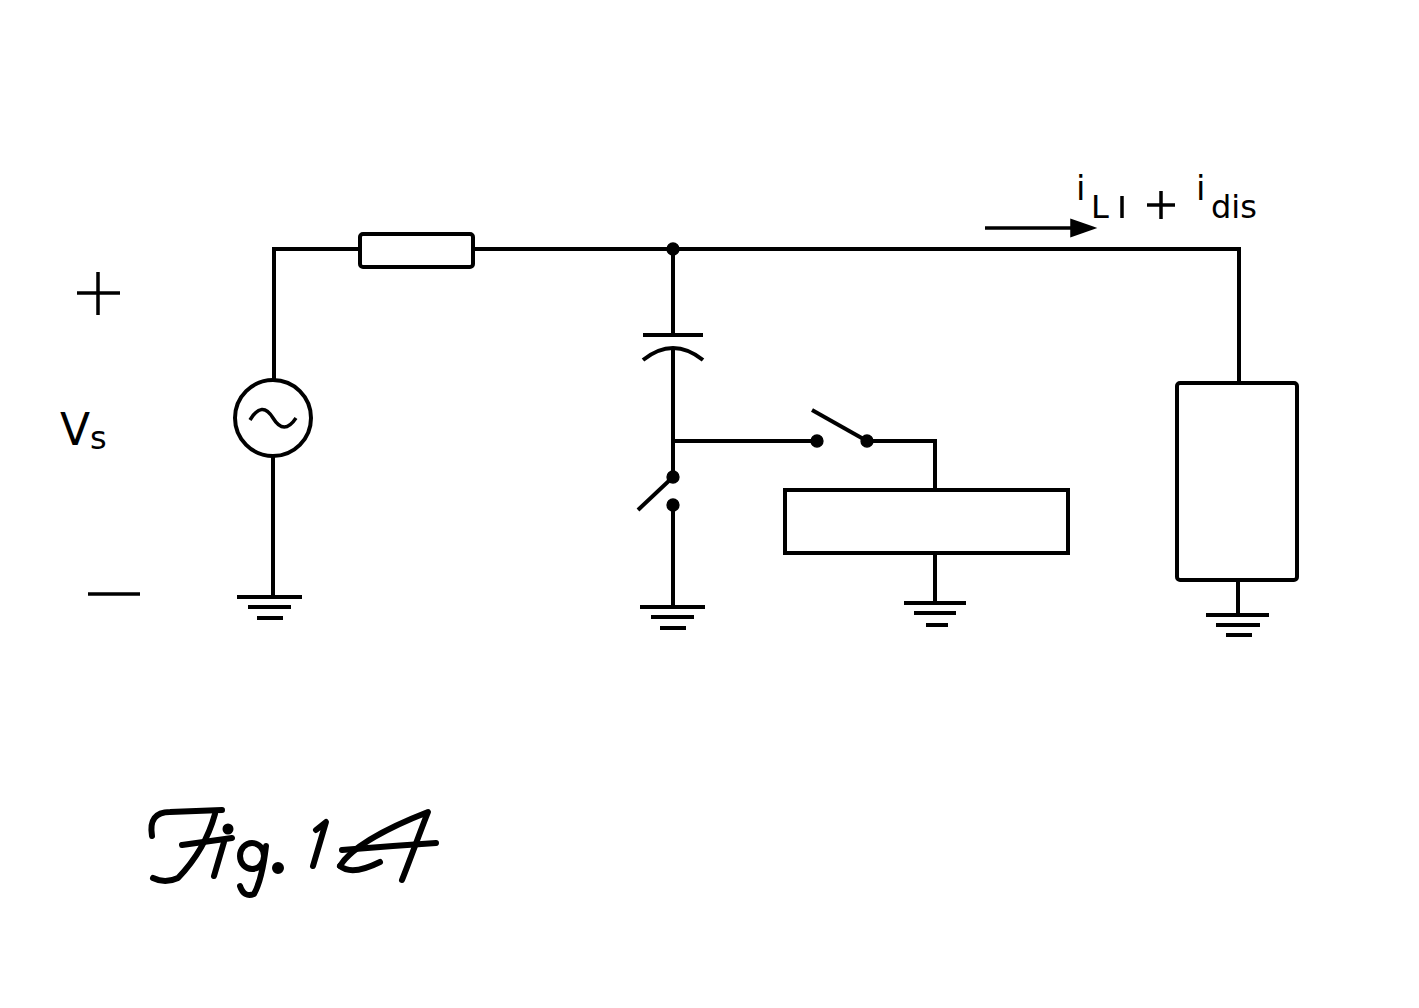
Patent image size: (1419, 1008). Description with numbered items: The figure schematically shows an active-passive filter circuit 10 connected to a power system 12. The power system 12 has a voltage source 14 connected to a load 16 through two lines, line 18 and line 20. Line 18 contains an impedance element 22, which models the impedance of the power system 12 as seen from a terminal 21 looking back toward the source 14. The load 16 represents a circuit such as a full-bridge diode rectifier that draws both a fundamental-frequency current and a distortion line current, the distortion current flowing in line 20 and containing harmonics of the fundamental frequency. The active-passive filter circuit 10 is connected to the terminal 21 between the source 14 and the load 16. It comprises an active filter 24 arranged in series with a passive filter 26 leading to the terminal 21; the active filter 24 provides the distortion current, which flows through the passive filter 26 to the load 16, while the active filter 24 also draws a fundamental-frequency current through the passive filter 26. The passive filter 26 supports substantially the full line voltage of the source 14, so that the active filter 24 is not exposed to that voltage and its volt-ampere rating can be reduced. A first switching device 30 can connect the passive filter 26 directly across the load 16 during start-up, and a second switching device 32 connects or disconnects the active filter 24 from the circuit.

The active-passive filter circuit 10 is at (432, 313).
The power system 12 is at (226, 44).
The voltage source 14 is at (189, 291).
The load 16 is at (1369, 331).
The line 18 is at (580, 114).
The line 20 is at (956, 190).
The terminal 21 is at (776, 138).
The impedance element 22 is at (428, 192).
The active filter 24 is at (952, 588).
The passive filter 26 is at (744, 323).
The first switching device 30 is at (580, 552).
The second switching device 32 is at (903, 380).